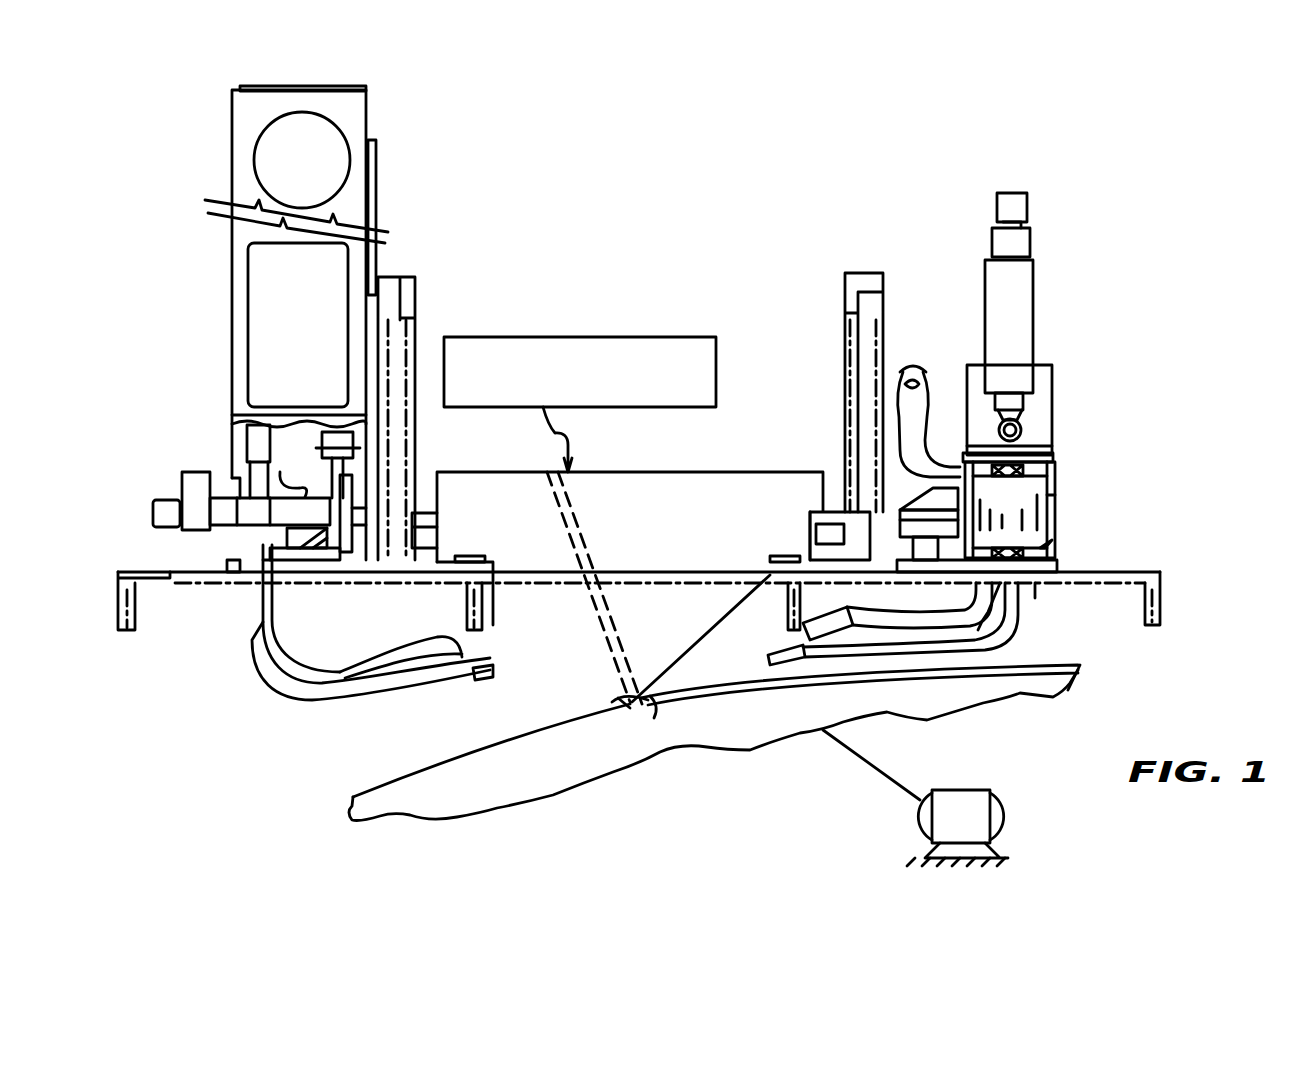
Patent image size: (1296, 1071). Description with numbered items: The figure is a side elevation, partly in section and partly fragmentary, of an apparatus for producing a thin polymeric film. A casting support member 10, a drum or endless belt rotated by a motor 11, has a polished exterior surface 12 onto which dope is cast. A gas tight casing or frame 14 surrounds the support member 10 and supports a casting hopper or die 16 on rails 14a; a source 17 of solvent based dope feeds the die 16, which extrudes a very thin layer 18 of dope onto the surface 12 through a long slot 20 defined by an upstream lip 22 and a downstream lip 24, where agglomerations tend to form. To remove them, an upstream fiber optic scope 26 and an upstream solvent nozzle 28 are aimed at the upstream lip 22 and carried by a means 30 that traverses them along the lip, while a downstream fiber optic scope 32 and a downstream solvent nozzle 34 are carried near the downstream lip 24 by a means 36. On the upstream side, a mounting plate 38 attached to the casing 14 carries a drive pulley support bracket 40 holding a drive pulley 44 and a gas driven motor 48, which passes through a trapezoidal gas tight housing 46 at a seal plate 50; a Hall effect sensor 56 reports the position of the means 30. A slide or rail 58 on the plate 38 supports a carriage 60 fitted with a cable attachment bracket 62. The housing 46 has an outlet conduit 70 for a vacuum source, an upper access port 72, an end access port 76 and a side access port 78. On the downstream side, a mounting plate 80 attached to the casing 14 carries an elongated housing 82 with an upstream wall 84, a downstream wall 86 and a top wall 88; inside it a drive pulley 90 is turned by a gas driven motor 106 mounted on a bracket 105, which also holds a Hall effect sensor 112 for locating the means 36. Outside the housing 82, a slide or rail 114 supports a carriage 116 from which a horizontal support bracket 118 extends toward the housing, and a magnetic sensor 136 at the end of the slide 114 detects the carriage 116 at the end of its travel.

The casting support member 10 is at (743, 728).
The motor 11 is at (992, 794).
The polished exterior surface 12 is at (492, 746).
The casing or frame 14 is at (165, 600).
The rails 14a is at (405, 290).
The casting hopper or die 16 is at (690, 472).
The source of solvent based dope 17 is at (668, 337).
The layer of dope 18 is at (706, 683).
The slot 20 is at (612, 680).
The upstream lip 22 is at (626, 704).
The downstream lip 24 is at (660, 700).
The upstream fiber optic scope 26 is at (330, 664).
The upstream solvent nozzle 28 is at (474, 664).
The traversing means 30 is at (294, 468).
The downstream fiber optic scope 32 is at (850, 618).
The downstream solvent nozzle 34 is at (812, 656).
The traversing means 36 is at (1034, 504).
The mounting plate 38 is at (228, 570).
The drive pulley support bracket 40 is at (320, 562).
The drive pulley 44 is at (378, 524).
The housing 46 is at (250, 122).
The gas driven motor 48 is at (166, 498).
The seal plate 50 is at (232, 484).
The Hall effect sensor 56 is at (353, 440).
The slide or rail 58 is at (276, 600).
The slider or carriage 60 is at (262, 582).
The cable attachment bracket 62 is at (354, 480).
The outlet conduit 70 is at (340, 135).
The upper access port 72 is at (320, 86).
The end access port 76 is at (298, 325).
The side access port 78 is at (378, 192).
The mounting plate 80 is at (1060, 565).
The elongated housing 82 is at (1056, 500).
The upstream wall 84 is at (977, 566).
The downstream wall 86 is at (1048, 546).
The top wall 88 is at (1053, 458).
The drive pulley 90 is at (1030, 578).
The bracket 105 is at (1018, 296).
The gas driven motor 106 is at (1020, 240).
The Hall effect sensor 112 is at (1032, 410).
The slide or rail 114 is at (923, 566).
The slider or carriage 116 is at (822, 512).
The horizontal support bracket 118 is at (945, 504).
The magnetic sensor 136 is at (930, 390).